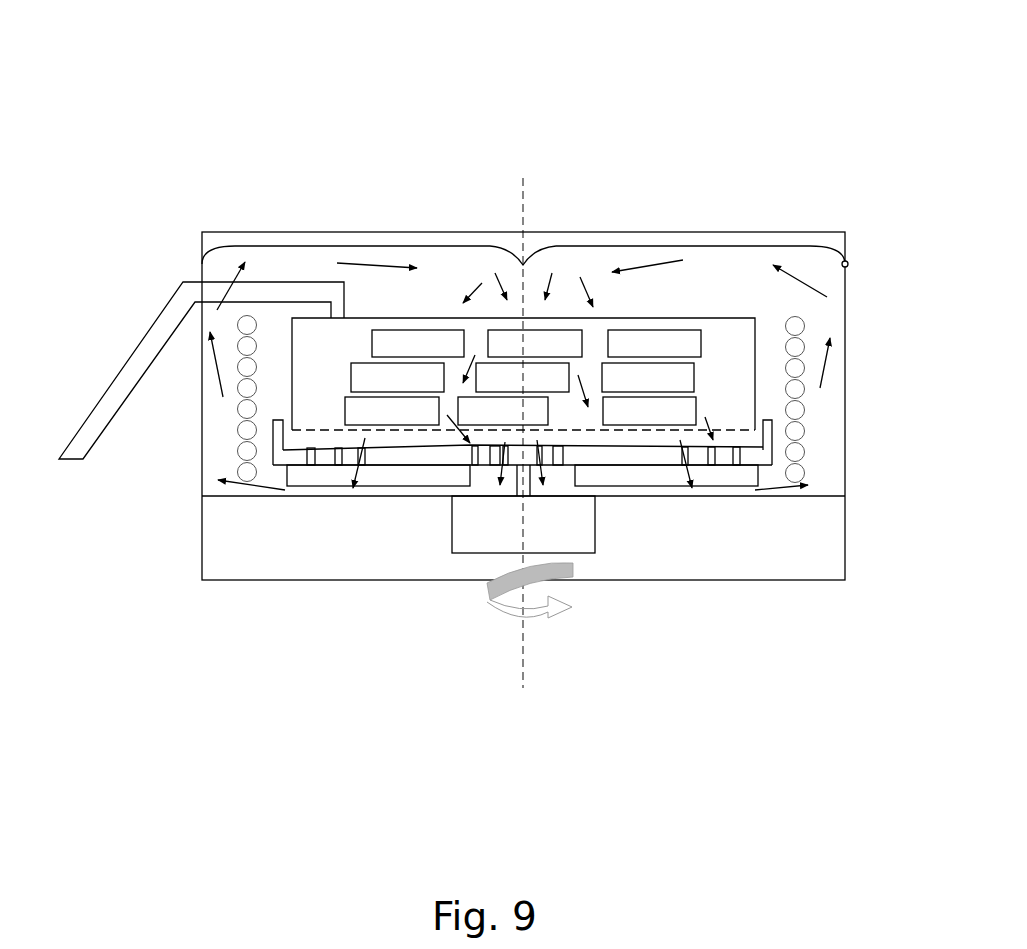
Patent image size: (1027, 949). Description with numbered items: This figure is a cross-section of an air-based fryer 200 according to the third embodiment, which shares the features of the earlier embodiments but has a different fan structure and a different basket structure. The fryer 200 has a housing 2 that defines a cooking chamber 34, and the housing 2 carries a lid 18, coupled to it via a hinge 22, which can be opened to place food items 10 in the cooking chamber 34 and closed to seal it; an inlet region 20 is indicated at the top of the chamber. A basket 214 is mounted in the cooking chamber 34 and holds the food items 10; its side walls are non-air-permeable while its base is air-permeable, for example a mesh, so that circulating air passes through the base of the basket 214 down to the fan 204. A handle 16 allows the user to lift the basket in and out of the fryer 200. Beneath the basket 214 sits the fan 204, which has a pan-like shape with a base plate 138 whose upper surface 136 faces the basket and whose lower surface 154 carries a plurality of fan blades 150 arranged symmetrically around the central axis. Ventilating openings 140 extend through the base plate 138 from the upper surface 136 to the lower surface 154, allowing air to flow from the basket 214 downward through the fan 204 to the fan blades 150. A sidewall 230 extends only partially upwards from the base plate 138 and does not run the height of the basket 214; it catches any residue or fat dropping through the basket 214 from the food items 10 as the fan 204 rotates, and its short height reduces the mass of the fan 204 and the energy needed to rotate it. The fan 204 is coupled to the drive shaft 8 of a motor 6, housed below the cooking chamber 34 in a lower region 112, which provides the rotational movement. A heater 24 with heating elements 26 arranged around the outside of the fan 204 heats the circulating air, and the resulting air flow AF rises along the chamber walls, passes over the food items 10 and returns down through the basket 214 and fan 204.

The air-based fryer 200 is at (262, 93).
The housing 2 is at (845, 350).
The lid 18 is at (220, 232).
The gas inlet 20 is at (490, 247).
The hinge 22 is at (845, 265).
The handle 16 is at (142, 338).
The air flow AF is at (220, 372).
The cooking chamber 34 is at (745, 275).
The basket 214 is at (558, 317).
The food items 10 is at (660, 350).
The heating element 26 is at (795, 412).
The heater 24 is at (800, 443).
The sidewall 230 is at (272, 432).
The lower surface 154 is at (404, 467).
The upper surface 136 is at (382, 450).
The base plate 138 is at (438, 455).
The ventilating openings 140 is at (712, 455).
The fan 204 is at (280, 468).
The fan blades 150 is at (640, 487).
The drive shaft 8 is at (519, 479).
The chamber base 112 is at (227, 550).
The motor 6 is at (578, 555).